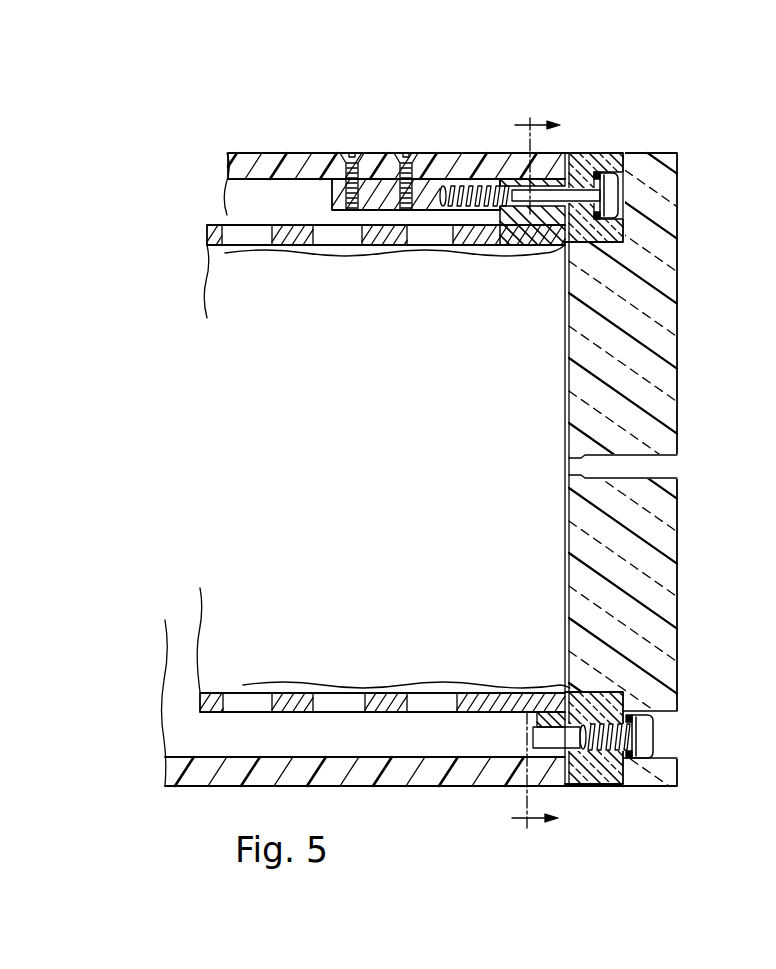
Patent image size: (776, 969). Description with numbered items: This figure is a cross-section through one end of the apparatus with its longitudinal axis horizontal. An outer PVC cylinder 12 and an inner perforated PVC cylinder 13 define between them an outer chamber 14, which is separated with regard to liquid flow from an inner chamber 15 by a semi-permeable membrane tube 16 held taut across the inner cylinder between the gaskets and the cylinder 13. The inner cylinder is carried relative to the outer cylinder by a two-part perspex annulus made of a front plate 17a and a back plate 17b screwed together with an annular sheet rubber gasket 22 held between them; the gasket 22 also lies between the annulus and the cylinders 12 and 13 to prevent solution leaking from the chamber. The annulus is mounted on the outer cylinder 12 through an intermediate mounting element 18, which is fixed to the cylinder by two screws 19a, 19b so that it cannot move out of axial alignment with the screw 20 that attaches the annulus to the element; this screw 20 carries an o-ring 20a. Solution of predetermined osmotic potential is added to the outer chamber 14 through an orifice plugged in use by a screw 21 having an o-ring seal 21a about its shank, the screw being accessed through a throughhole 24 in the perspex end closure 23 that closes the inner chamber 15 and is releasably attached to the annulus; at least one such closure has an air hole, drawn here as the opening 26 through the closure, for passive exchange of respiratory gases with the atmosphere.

The outer PVC cylinder 12 is at (268, 153).
The inner perforated PVC cylinder 13 is at (340, 245).
The outer chamber 14 is at (250, 205).
The inner chamber 15 is at (364, 440).
The semi-permeable membrane tube 16 is at (402, 252).
The front plate 17a is at (600, 152).
The back plate 17b is at (486, 218).
The intermediate mounting element 18 is at (430, 196).
The screw 19a is at (351, 152).
The screw 19b is at (405, 154).
The screw 20 is at (608, 197).
The o-ring 20a is at (666, 207).
The screw 21 is at (655, 738).
The o-ring seal 21a is at (630, 760).
The annular sheet rubber gasket 22 is at (565, 152).
The end closure 23 is at (678, 349).
The throughhole 24 is at (668, 721).
The slot 26 is at (677, 461).